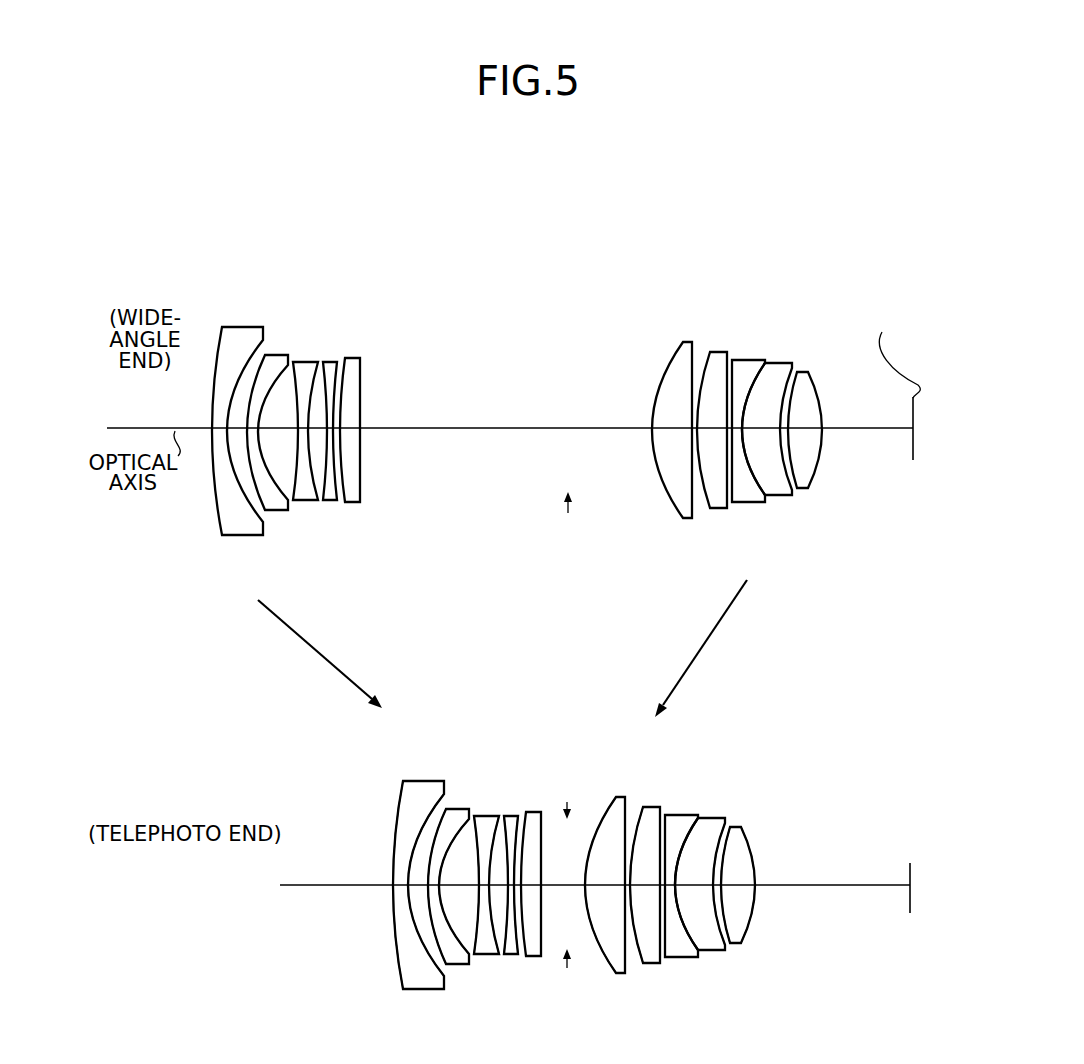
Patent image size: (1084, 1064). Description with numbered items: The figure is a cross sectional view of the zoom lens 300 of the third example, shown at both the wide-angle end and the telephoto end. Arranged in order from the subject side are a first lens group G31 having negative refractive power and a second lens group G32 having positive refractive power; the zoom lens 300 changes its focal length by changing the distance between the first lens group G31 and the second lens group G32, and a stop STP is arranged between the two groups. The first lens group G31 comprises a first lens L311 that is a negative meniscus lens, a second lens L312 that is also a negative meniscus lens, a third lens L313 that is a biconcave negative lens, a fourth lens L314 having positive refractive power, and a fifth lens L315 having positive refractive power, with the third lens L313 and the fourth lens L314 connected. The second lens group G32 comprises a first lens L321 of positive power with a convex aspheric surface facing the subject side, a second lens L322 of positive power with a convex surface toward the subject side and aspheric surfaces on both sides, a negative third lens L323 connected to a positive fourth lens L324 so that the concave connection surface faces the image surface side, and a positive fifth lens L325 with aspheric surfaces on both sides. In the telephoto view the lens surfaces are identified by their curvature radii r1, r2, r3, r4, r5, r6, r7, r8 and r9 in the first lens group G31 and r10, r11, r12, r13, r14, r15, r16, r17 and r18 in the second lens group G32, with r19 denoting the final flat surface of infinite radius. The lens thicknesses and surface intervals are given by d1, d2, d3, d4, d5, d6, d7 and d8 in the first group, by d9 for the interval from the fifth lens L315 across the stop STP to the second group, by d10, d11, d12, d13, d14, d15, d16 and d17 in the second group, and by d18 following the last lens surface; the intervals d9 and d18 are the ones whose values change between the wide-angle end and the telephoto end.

The zoom lens 300 is at (506, 222).
The first lens group G31 is at (422, 262).
The second lens group G32 is at (837, 262).
The first lens L311 is at (248, 333).
The second lens L312 is at (277, 357).
The third lens L313 is at (305, 370).
The fourth lens L314 is at (328, 363).
The fifth lens L315 is at (358, 360).
The first lens L321 is at (675, 363).
The second lens L322 is at (710, 352).
The third lens L323 is at (735, 362).
The fourth lens L324 is at (775, 368).
The fifth lens L325 is at (804, 374).
The stop STP is at (570, 358).
The curvature radius r1 is at (402, 798).
The curvature radius r2 is at (437, 806).
The curvature radius r3 is at (440, 806).
The curvature radius r4 is at (468, 812).
The curvature radius r5 is at (475, 817).
The curvature radius r6 is at (497, 817).
The curvature radius r7 is at (513, 813).
The curvature radius r8 is at (523, 813).
The curvature radius r9 is at (547, 817).
The curvature radius r10 is at (608, 802).
The curvature radius r11 is at (623, 797).
The curvature radius r12 is at (642, 805).
The curvature radius r13 is at (648, 807).
The curvature radius r14 is at (663, 817).
The curvature radius r15 is at (695, 815).
The curvature radius r16 is at (720, 820).
The curvature radius r17 is at (750, 827).
The curvature radius r18 is at (750, 847).
The curvature radius r19 is at (910, 863).
The lens thickness d1 is at (402, 890).
The lens surface interval d2 is at (415, 890).
The lens thickness d3 is at (442, 890).
The lens surface interval d4 is at (465, 887).
The lens thickness d5 is at (484, 890).
The lens thickness d6 is at (505, 890).
The lens surface interval d7 is at (514, 890).
The lens thickness d8 is at (522, 890).
The lens surface interval d9 is at (565, 887).
The lens thickness d10 is at (605, 890).
The lens surface interval d11 is at (628, 890).
The lens thickness d12 is at (653, 890).
The lens surface interval d13 is at (668, 890).
The lens thickness d14 is at (688, 890).
The lens thickness d15 is at (715, 890).
The lens surface interval d16 is at (733, 890).
The lens thickness d17 is at (743, 890).
The lens surface interval d18 is at (850, 890).